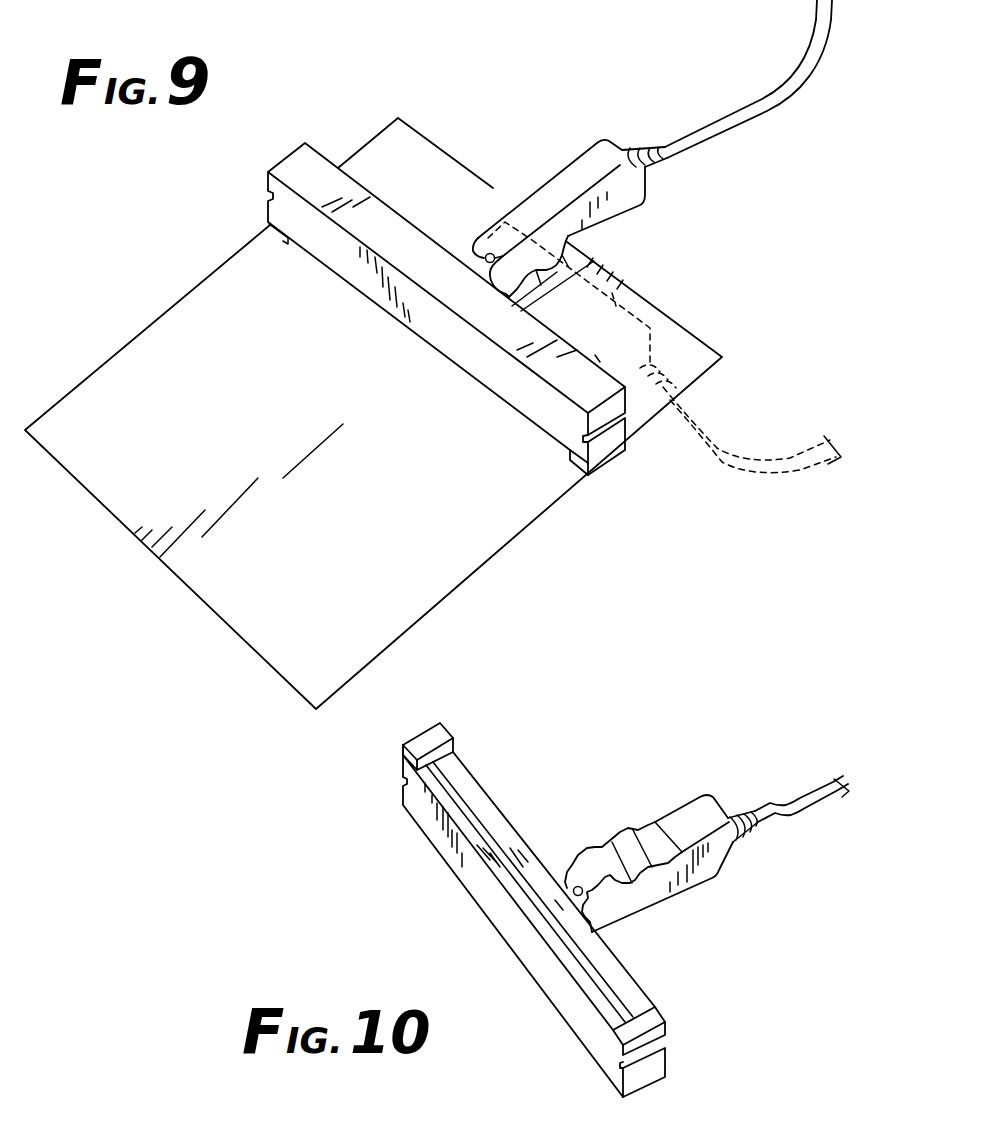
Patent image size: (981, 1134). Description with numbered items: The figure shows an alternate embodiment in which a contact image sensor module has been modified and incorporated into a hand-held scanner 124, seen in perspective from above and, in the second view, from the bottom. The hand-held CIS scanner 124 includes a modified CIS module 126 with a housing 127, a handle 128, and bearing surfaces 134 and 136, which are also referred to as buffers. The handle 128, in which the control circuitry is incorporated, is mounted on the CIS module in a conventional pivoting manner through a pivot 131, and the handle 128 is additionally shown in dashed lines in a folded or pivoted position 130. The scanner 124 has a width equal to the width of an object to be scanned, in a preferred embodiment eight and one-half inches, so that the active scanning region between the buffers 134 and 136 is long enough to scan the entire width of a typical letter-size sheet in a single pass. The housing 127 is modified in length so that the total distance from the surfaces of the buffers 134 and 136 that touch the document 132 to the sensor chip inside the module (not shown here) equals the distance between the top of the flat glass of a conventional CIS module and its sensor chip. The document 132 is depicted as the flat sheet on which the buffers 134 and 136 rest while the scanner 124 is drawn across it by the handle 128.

In FIG. 9, the hand-held scanner 124 is at (477, 139).
In FIG. 9, the modified CIS module 126 is at (365, 218).
In FIG. 9, the housing 127 is at (493, 377).
In FIG. 10, the housing 127 is at (505, 905).
In FIG. 9, the handle 128 is at (580, 172).
In FIG. 10, the handle 128 is at (652, 820).
In FIG. 9, the folded or pivoted position 130 is at (617, 293).
In FIG. 9, the pivot 131 is at (477, 240).
In FIG. 10, the pivot 131 is at (563, 862).
In FIG. 9, the document 132 is at (213, 405).
In FIG. 9, the bearing surface 134 is at (277, 238).
In FIG. 10, the bearing surface 134 is at (647, 1020).
In FIG. 9, the bearing surface 136 is at (580, 463).
In FIG. 10, the bearing surface 136 is at (438, 727).